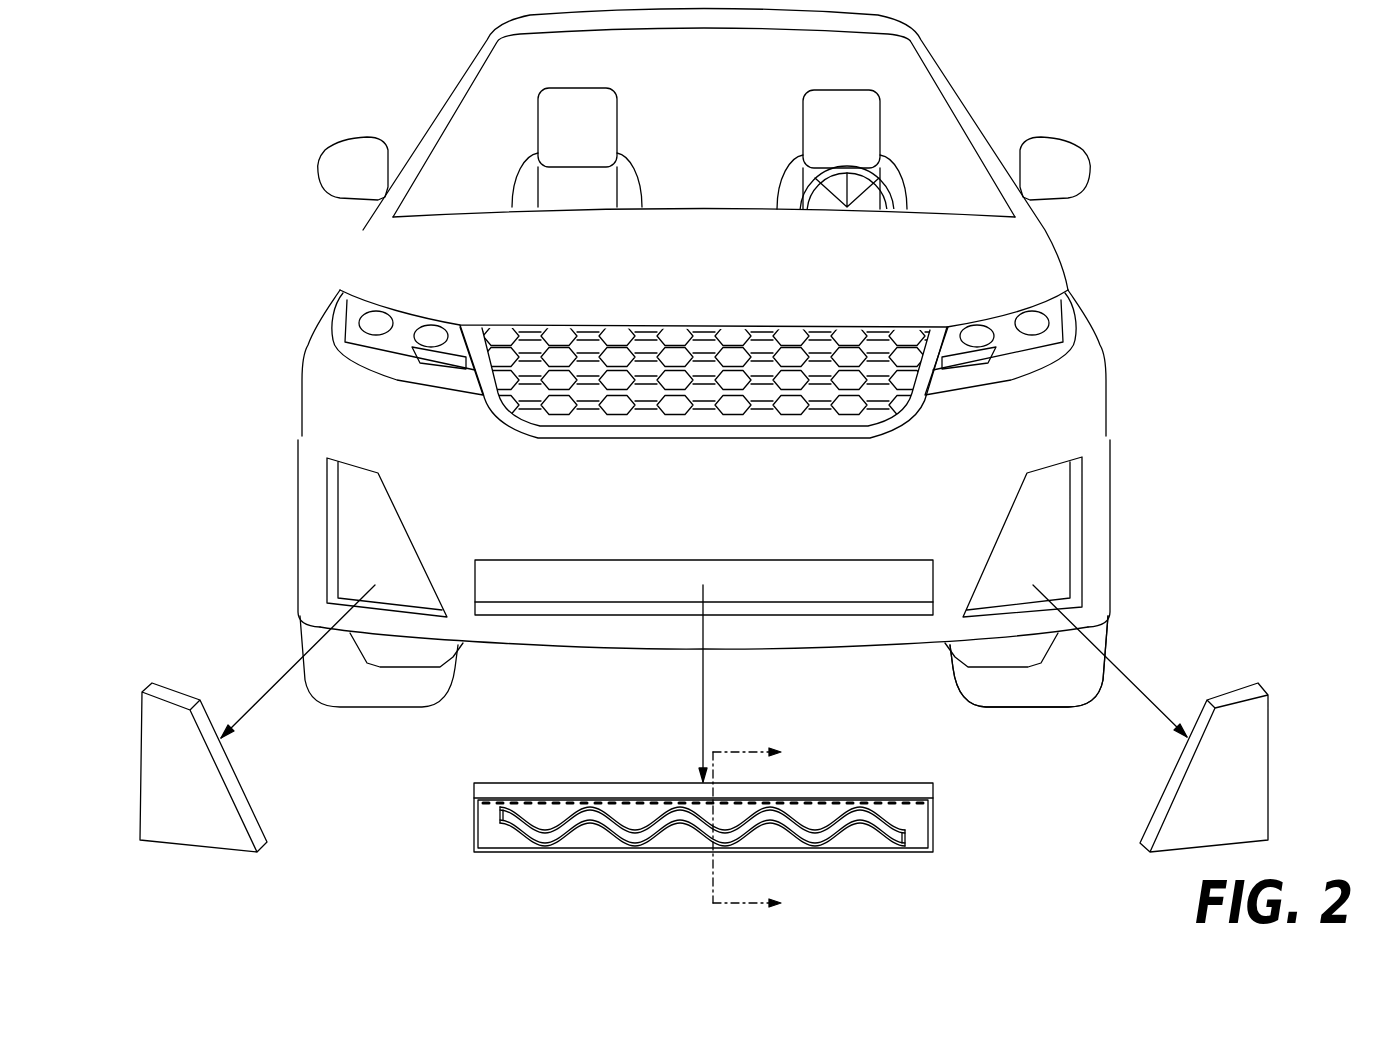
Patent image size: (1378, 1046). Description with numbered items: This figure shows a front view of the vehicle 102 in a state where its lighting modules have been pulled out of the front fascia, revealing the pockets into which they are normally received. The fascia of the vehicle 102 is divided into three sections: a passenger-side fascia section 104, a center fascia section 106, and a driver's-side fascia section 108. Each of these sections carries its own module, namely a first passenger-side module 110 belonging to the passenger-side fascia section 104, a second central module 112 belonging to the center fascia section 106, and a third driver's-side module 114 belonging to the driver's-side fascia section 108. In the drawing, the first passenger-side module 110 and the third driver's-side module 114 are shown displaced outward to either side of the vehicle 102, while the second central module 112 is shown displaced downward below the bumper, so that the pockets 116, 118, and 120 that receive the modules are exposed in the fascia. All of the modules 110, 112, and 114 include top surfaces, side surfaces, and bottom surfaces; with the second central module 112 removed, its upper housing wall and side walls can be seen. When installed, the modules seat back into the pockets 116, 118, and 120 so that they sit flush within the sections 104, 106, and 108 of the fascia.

The vehicle 102 is at (1013, 272).
The passenger-side fascia section 104 is at (323, 620).
The center fascia section 106 is at (945, 597).
The driver's-side fascia section 108 is at (1022, 622).
The first passenger-side module 110 is at (180, 700).
The second central module 112 is at (608, 782).
The third driver's-side module 114 is at (1199, 719).
The pocket 116 is at (366, 513).
The pocket 118 is at (612, 568).
The pocket 120 is at (1032, 550).